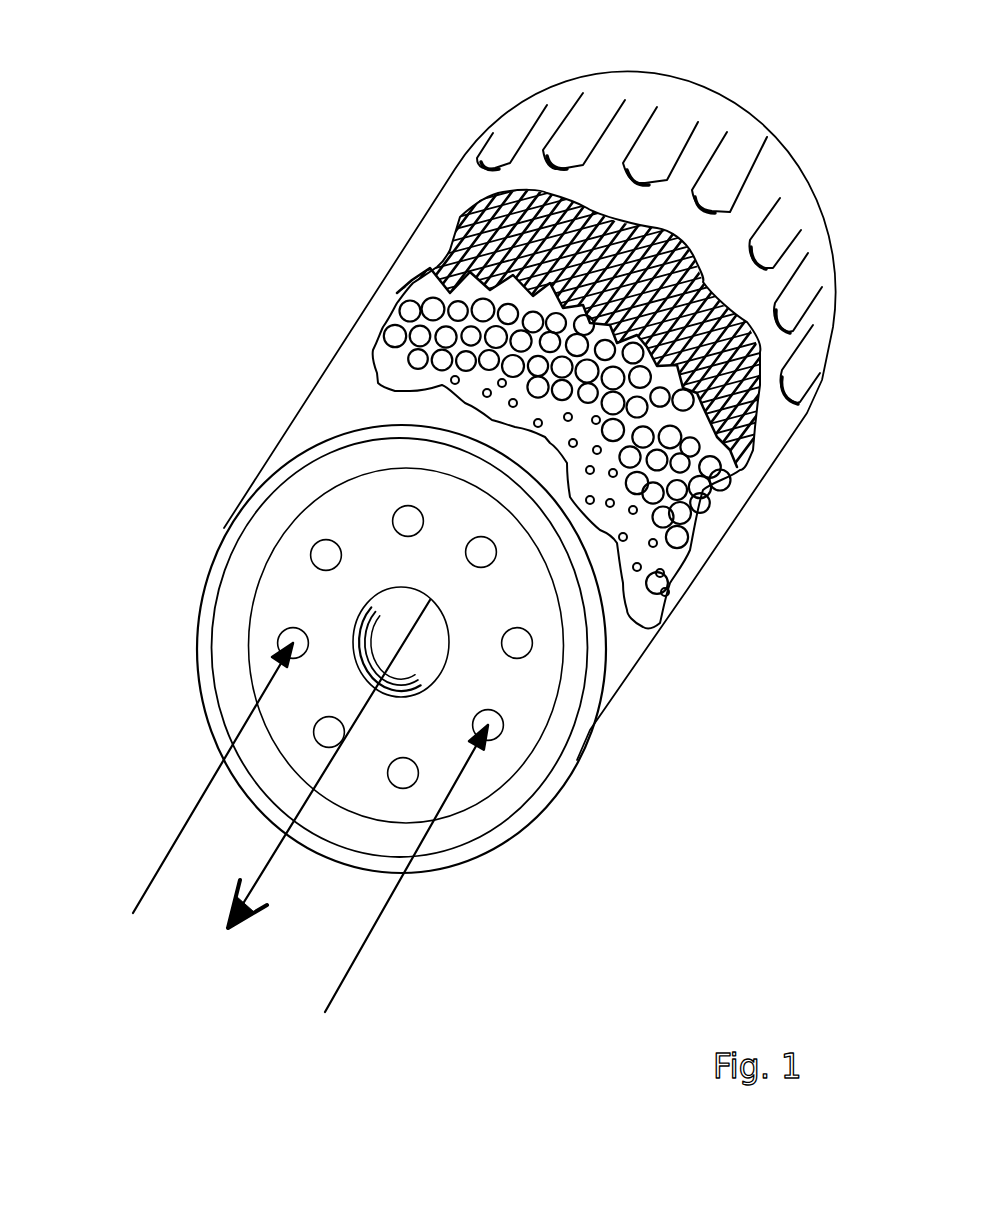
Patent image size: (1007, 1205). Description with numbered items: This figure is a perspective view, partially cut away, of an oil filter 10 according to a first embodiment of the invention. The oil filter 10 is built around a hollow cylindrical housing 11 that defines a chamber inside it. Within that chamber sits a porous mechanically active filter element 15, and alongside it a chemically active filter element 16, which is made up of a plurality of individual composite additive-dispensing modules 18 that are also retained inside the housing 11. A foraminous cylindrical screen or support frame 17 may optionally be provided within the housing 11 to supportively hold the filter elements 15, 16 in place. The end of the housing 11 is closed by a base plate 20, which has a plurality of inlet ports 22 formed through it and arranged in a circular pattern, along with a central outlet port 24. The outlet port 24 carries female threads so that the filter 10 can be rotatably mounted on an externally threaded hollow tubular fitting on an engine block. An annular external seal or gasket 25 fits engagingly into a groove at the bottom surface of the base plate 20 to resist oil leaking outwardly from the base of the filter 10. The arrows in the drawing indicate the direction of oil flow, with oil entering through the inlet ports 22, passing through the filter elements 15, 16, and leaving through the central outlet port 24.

The oil filter 10 is at (362, 146).
The hollow cylindrical housing 11 is at (335, 403).
The porous mechanically active filter element 15 is at (457, 240).
The chemically active filter element 16 is at (677, 493).
The foraminous cylindrical screen or support frame 17 is at (650, 563).
The composite additive-dispensing modules 18 is at (383, 353).
The base plate 20 is at (275, 582).
The inlet ports 22 is at (520, 645).
The central outlet port 24 is at (400, 594).
The annular external seal or gasket 25 is at (488, 817).